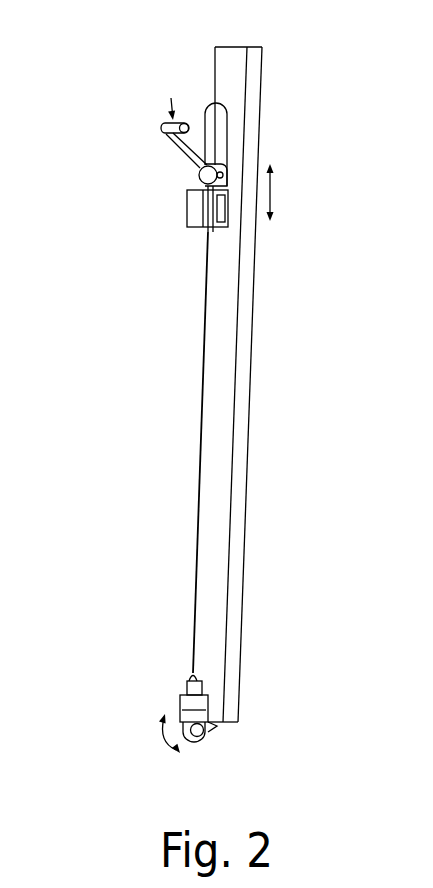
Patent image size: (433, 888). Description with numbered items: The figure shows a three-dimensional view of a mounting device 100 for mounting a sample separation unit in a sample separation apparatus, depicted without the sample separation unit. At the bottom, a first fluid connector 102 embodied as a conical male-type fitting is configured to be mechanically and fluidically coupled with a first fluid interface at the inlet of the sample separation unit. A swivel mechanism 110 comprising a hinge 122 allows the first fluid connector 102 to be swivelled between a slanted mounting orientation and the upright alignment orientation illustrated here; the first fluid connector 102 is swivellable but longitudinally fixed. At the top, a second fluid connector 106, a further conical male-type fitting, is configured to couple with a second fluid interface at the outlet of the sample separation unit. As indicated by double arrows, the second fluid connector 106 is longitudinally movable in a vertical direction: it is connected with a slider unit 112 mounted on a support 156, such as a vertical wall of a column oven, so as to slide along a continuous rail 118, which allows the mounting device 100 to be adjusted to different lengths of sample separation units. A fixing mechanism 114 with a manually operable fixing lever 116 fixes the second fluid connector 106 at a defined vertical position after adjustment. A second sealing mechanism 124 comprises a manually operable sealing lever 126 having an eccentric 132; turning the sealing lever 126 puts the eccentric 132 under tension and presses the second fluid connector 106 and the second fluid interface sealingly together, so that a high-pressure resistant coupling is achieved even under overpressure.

The mounting device 100 is at (108, 77).
The first fluid connector 102 is at (174, 677).
The second fluid connector 106 is at (200, 210).
The swivel mechanism 110 is at (178, 755).
The slider unit 112 is at (178, 202).
The fixing mechanism 114 is at (172, 112).
The fixing lever 116 is at (162, 128).
The rail 118 is at (205, 245).
The hinge 122 is at (203, 737).
The second sealing mechanism 124 is at (209, 97).
The sealing lever 126 is at (228, 137).
The eccentric 132 is at (187, 177).
The support 156 is at (253, 308).